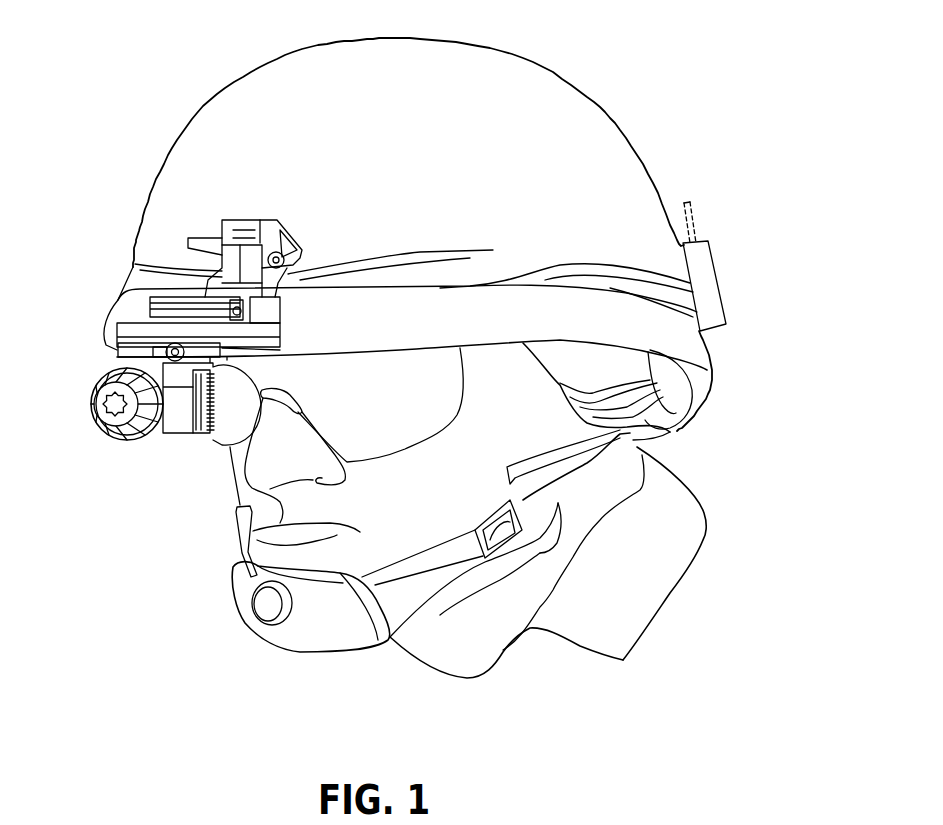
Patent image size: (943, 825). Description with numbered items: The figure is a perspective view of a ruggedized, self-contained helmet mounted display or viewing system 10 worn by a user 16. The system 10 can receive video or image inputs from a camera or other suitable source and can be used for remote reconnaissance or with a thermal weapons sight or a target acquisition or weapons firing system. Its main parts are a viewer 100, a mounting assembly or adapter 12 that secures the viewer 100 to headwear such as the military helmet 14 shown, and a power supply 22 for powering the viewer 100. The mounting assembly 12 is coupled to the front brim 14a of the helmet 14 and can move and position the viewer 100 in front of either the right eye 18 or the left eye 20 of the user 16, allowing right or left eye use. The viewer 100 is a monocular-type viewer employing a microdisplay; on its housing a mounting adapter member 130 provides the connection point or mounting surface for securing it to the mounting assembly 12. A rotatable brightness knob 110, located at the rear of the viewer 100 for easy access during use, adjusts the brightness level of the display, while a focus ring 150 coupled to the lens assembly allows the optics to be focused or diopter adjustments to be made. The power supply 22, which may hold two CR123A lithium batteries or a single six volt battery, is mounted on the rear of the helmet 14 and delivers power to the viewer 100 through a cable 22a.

The helmet mounted display or viewing system 10 is at (80, 283).
The mounting assembly 12 is at (123, 325).
The helmet 14 is at (470, 68).
The front brim 14a is at (403, 335).
The user 16 is at (323, 617).
The right eye 18 is at (213, 480).
The left eye 20 is at (386, 476).
The power supply 22 is at (708, 252).
The cable 22a is at (691, 220).
The viewer 100 is at (157, 430).
The brightness knob 110 is at (97, 413).
The mounting adapter member 130 is at (110, 370).
The focus ring 150 is at (193, 430).